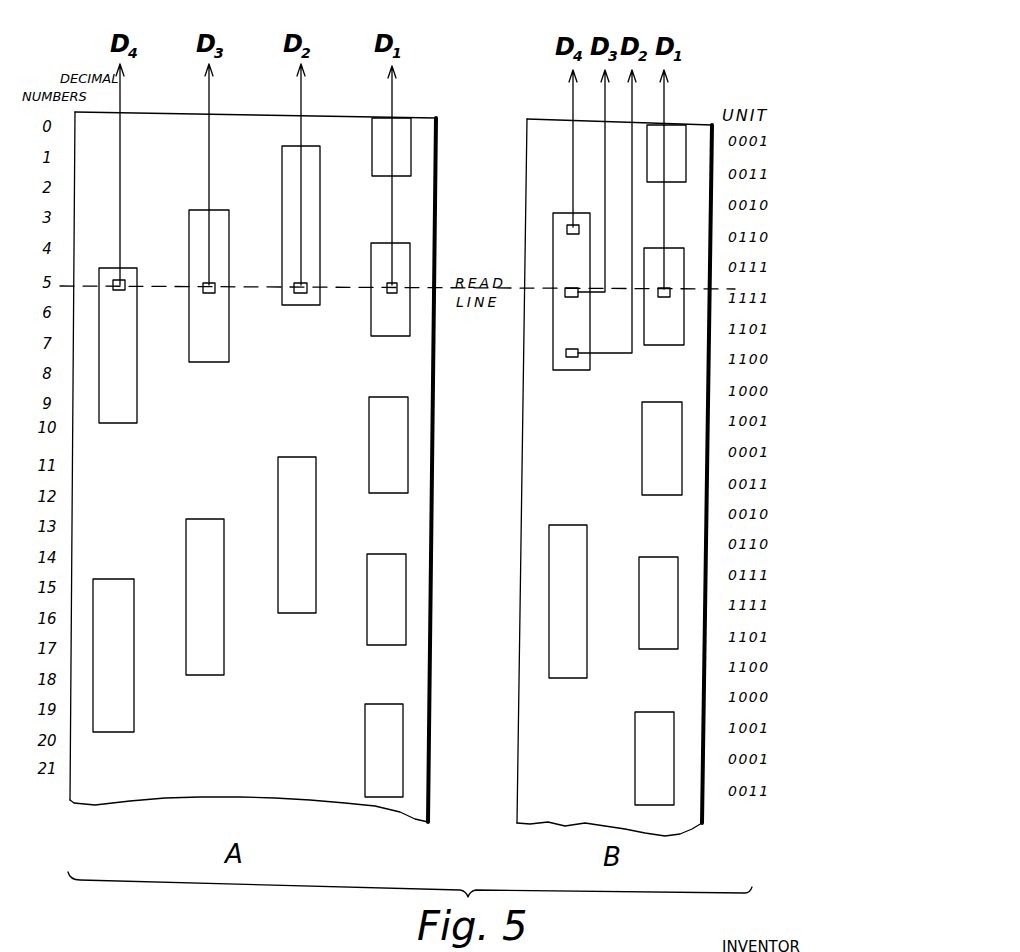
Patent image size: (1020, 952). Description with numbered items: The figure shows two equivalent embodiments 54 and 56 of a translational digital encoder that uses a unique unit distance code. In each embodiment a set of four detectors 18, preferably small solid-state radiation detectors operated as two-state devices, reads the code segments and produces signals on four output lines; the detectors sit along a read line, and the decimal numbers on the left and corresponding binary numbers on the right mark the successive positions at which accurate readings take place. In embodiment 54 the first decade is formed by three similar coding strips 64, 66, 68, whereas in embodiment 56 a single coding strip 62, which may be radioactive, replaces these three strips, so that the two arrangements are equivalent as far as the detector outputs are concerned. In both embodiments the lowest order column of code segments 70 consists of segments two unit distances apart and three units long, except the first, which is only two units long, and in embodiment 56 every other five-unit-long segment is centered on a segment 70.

The detector 18 is at (205, 283).
The translational digital encoder embodiment 54 is at (456, 135).
The translational digital encoder embodiment 56 is at (520, 138).
The single coding strip 62 is at (568, 370).
The coding strip 64 is at (137, 405).
The coding strip 66 is at (205, 362).
The coding strip 68 is at (298, 305).
The lowest order column of code segments 70 is at (385, 336).